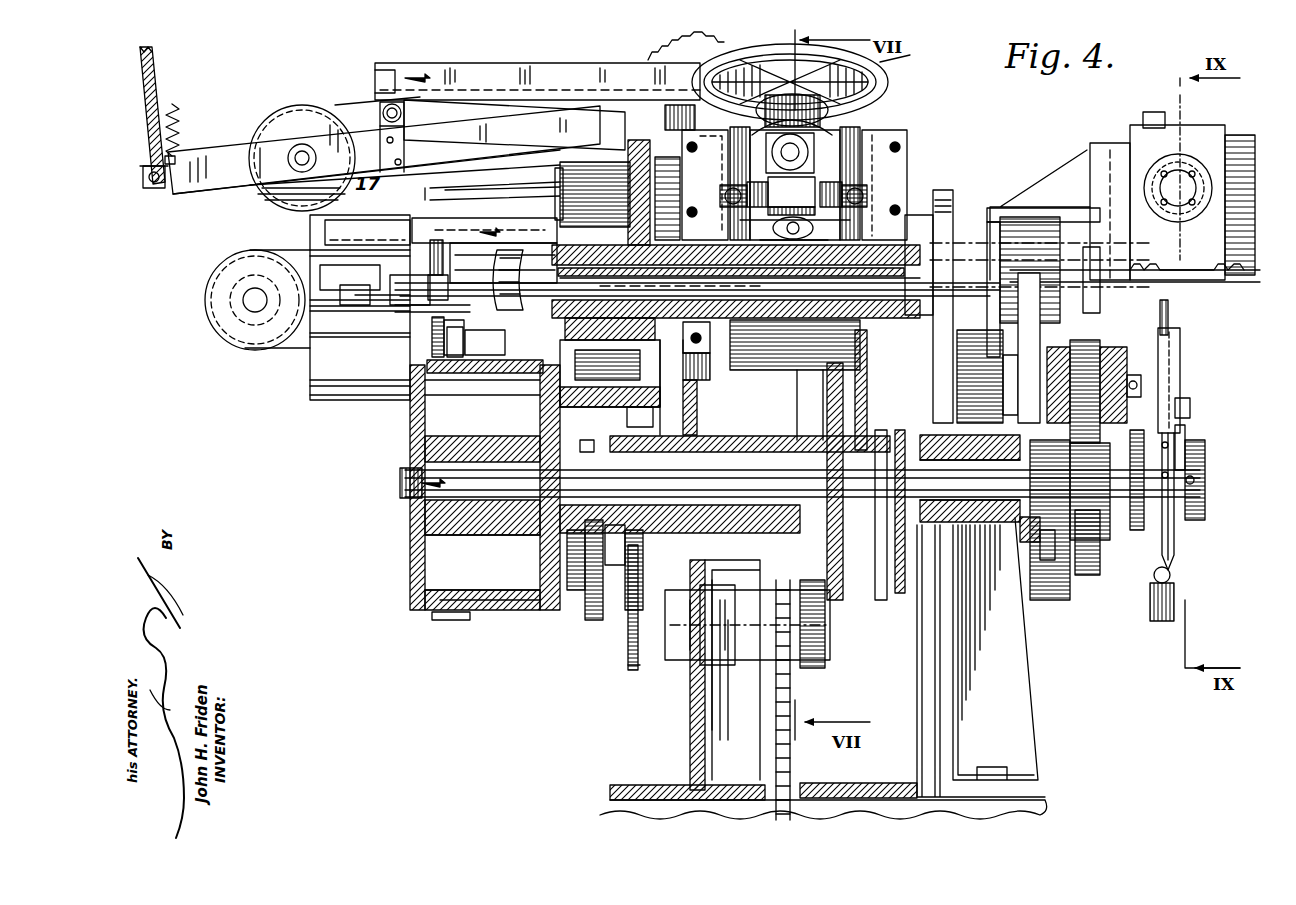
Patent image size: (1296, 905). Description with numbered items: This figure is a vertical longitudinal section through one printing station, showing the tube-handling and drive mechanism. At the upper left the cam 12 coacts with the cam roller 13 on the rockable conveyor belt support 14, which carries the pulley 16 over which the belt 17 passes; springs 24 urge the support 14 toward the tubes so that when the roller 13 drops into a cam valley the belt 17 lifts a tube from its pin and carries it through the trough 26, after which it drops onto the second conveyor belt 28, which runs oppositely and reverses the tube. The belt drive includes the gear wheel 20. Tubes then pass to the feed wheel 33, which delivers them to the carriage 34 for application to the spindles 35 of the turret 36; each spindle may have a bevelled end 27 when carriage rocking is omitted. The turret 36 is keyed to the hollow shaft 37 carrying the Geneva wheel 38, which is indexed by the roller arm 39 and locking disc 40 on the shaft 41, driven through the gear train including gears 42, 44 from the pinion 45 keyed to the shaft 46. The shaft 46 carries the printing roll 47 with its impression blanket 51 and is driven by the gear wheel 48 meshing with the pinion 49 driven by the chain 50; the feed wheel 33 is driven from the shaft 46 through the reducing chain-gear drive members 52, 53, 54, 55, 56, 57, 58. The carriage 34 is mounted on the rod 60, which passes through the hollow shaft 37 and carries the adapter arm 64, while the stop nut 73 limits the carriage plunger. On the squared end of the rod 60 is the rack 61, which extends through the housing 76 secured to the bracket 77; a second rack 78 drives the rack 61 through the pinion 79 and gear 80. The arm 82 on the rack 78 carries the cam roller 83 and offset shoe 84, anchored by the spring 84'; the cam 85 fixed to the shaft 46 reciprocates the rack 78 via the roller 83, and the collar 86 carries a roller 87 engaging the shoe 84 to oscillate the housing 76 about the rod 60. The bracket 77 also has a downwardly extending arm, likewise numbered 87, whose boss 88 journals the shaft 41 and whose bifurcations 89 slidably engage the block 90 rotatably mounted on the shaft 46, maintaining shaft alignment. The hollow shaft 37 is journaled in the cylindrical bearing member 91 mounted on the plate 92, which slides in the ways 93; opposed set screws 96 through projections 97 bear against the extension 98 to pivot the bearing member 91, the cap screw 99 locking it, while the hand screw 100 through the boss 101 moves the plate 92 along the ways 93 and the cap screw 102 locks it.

The cam 12 is at (155, 62).
The cam roller 13 is at (148, 195).
The rockable conveyor belt support 14 is at (228, 150).
The pulley 16 is at (407, 112).
The belt 17 is at (345, 102).
The gear wheel 20 is at (662, 56).
The spring 24 is at (175, 105).
The trough 26 is at (520, 65).
The bevelled end 27 is at (405, 178).
The second conveyor belt 28 is at (285, 366).
The feed wheel 33 is at (375, 398).
The tube carriage 34 is at (398, 306).
The spindles 35 is at (494, 200).
The turret 36 is at (626, 142).
The hollow shaft 37 is at (900, 212).
The Geneva wheel 38 is at (950, 188).
The roller arm 39 is at (440, 238).
The locking disc 40 is at (955, 365).
The shaft 41 is at (1180, 387).
The gear 42 is at (1100, 352).
The gear 44 is at (1092, 560).
The pinion 45 is at (1079, 520).
The shaft 46 is at (430, 475).
The printing roll 47 is at (540, 610).
The gear wheel 48 is at (795, 403).
The pinion 49 is at (855, 624).
The chain 50 is at (788, 692).
The impression blanket 51 is at (488, 345).
The chain-gear drive member 52 is at (579, 439).
The chain-gear drive member 53 is at (590, 618).
The chain-gear drive member 54 is at (637, 567).
The chain-gear drive member 55 is at (628, 640).
The chain-gear drive member 56 is at (626, 664).
The chain-gear drive member 57 is at (468, 341).
The chain-gear drive member 58 is at (430, 352).
The rod 60 is at (743, 274).
The rack 61 is at (1222, 288).
The adapter arm 64 is at (519, 297).
The adjustable stop nut 73 is at (362, 300).
The housing 76 is at (1200, 136).
The bracket 77 is at (1018, 208).
The second rack 78 is at (1167, 118).
The pinion 79 is at (1210, 250).
The gear 80 is at (1120, 208).
The arm 82 is at (1182, 350).
The cam roller 83 is at (1192, 408).
The offset shoe 84 is at (1200, 494).
The spring 84' is at (1142, 594).
The cam 85 is at (1186, 452).
The collar 86 is at (1140, 530).
The downwardly extending arm 87 is at (1050, 343).
The boss 88 is at (970, 478).
The bifurcations 89 is at (1035, 575).
The block 90 is at (1040, 545).
The cylindrical bearing member 91 is at (892, 212).
The plate 92 is at (872, 160).
The ways 93 is at (712, 372).
The set screws 96 is at (720, 198).
The projections 97 is at (792, 181).
The extension 98 is at (791, 196).
The cap screw 99 is at (772, 226).
The hand screw 100 is at (880, 86).
The boss 101 is at (885, 112).
The cap screw 102 is at (810, 152).